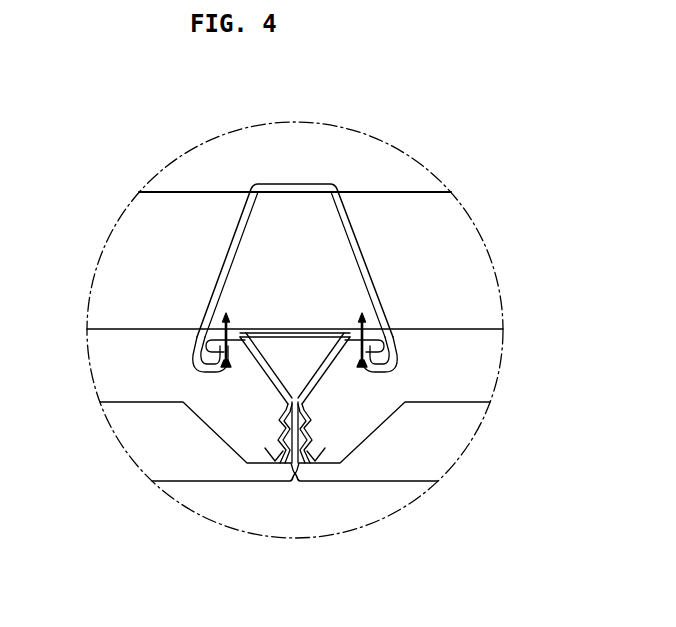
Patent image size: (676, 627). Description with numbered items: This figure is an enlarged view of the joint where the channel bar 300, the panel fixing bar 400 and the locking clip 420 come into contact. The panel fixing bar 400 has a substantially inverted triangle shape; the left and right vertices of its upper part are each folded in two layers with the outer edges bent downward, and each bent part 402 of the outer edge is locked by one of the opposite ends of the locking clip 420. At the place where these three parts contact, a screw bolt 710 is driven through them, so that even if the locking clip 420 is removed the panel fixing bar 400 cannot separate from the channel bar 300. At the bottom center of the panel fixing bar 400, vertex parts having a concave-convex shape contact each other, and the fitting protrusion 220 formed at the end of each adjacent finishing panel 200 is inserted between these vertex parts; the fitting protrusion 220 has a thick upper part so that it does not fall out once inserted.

The finishing panel 200 is at (212, 487).
The fitting protrusion 220 is at (305, 425).
The channel bar 300 is at (196, 186).
The panel fixing bar 400 is at (249, 381).
The hook portion 402 is at (213, 336).
The locking clip 420 is at (305, 183).
The screw bolt 710 is at (227, 314).